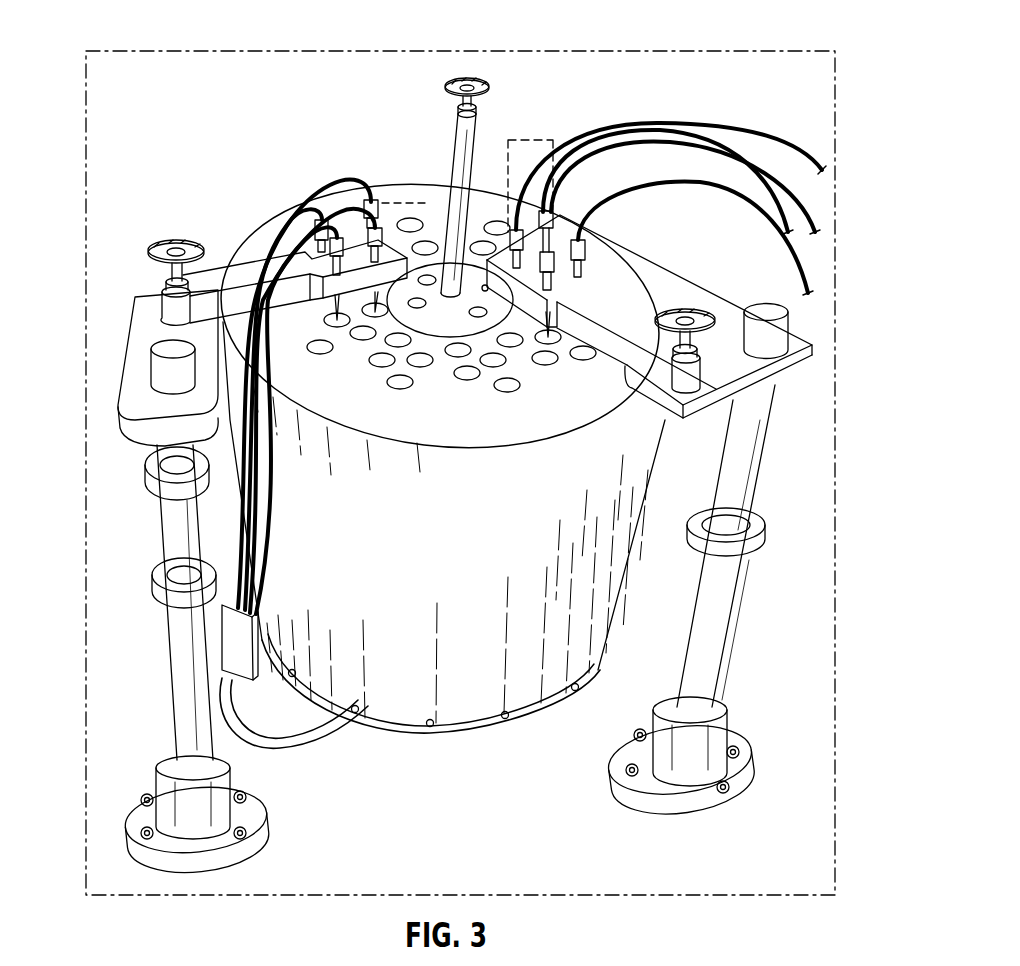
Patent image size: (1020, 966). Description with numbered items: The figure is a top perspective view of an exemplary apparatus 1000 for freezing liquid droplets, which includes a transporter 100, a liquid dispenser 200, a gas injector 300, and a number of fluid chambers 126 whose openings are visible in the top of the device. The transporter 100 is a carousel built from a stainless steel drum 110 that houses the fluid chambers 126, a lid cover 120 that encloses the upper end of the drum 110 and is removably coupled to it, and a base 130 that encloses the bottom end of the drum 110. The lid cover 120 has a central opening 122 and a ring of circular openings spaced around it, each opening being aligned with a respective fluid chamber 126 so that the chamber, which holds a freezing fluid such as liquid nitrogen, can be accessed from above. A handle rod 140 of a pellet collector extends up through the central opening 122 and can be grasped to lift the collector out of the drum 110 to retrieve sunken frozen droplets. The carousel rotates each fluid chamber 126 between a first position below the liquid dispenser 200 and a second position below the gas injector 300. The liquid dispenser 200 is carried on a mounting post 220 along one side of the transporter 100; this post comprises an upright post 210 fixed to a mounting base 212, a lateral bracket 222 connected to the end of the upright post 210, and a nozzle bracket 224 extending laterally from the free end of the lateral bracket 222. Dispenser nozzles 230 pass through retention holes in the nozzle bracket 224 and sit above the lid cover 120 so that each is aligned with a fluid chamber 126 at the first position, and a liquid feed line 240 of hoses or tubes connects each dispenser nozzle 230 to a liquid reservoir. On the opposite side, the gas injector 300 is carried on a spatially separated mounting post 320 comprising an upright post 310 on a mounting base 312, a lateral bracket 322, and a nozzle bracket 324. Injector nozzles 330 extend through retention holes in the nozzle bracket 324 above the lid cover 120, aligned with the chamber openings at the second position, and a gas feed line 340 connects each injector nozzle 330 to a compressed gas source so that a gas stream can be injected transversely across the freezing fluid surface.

The apparatus for freezing liquid droplets 1000 is at (527, 76).
The transporter 100 is at (385, 176).
The drum 110 is at (596, 618).
The lid cover 120 is at (433, 440).
The central opening 122 is at (447, 323).
The fluid chambers 126 is at (515, 385).
The base 130 is at (457, 727).
The handle rod 140 is at (462, 127).
The liquid dispenser 200 is at (724, 105).
The upright post 210 is at (742, 467).
The mounting base 212 is at (728, 732).
The mounting post 220 is at (699, 297).
The lateral bracket 222 is at (797, 360).
The nozzle bracket 224 is at (683, 310).
The dispenser nozzles 230 is at (528, 140).
The liquid feed line 240 is at (632, 127).
The gas injector 300 is at (224, 234).
The upright post 310 is at (178, 537).
The mounting base 312 is at (233, 780).
The mounting post 320 is at (135, 285).
The lateral bracket 322 is at (138, 340).
The nozzle bracket 324 is at (280, 290).
The injector nozzles 330 is at (428, 222).
The gas feed line 340 is at (316, 184).